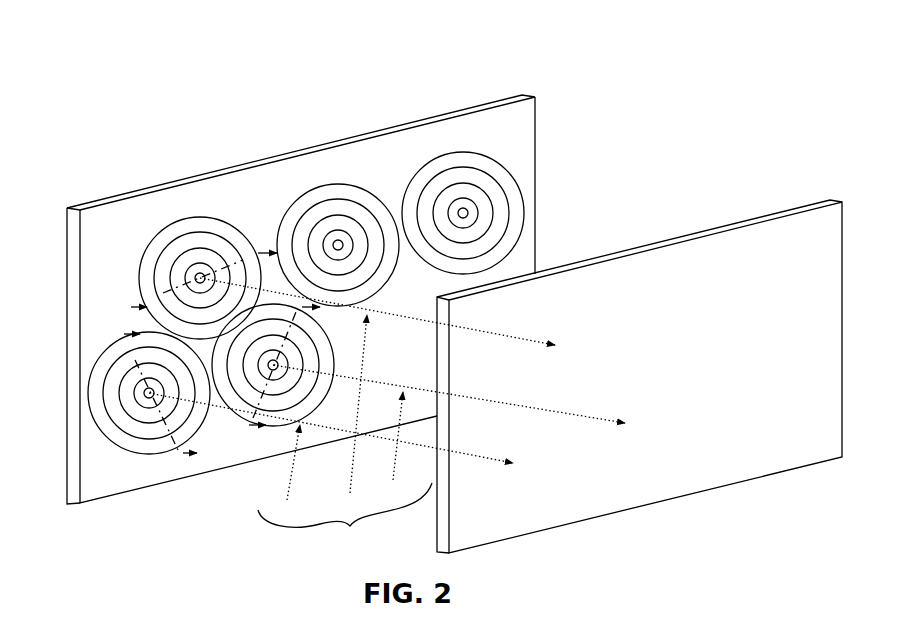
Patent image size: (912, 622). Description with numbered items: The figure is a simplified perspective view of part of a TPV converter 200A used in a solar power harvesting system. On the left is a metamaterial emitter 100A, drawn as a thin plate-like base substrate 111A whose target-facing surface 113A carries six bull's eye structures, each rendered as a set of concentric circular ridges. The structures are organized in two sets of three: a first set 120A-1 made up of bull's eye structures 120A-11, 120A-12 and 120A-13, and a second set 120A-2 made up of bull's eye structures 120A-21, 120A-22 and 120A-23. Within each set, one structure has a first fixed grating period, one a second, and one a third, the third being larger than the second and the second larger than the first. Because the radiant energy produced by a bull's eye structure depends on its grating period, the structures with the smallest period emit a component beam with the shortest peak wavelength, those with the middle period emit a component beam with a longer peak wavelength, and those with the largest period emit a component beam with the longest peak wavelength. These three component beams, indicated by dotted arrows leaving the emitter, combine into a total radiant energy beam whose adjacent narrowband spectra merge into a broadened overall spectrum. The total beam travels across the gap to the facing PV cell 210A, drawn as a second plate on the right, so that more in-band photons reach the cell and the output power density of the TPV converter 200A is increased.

The TPV converter 200A is at (155, 62).
The metamaterial emitter 100A is at (280, 110).
The base substrate 111A is at (271, 155).
The target-facing surface 113A is at (286, 173).
The first set of bull's eye structures 120A-1 is at (182, 115).
The bull's eye structure 120A-11 is at (99, 362).
The bull's eye structure 120A-12 is at (142, 255).
The bull's eye structure 120A-13 is at (269, 302).
The second set of bull's eye structures 120A-2 is at (530, 85).
The bull's eye structure 120A-21 is at (335, 184).
The bull's eye structure 120A-22 is at (390, 267).
The bull's eye structure 120A-23 is at (480, 151).
The PV cell 210A is at (780, 210).